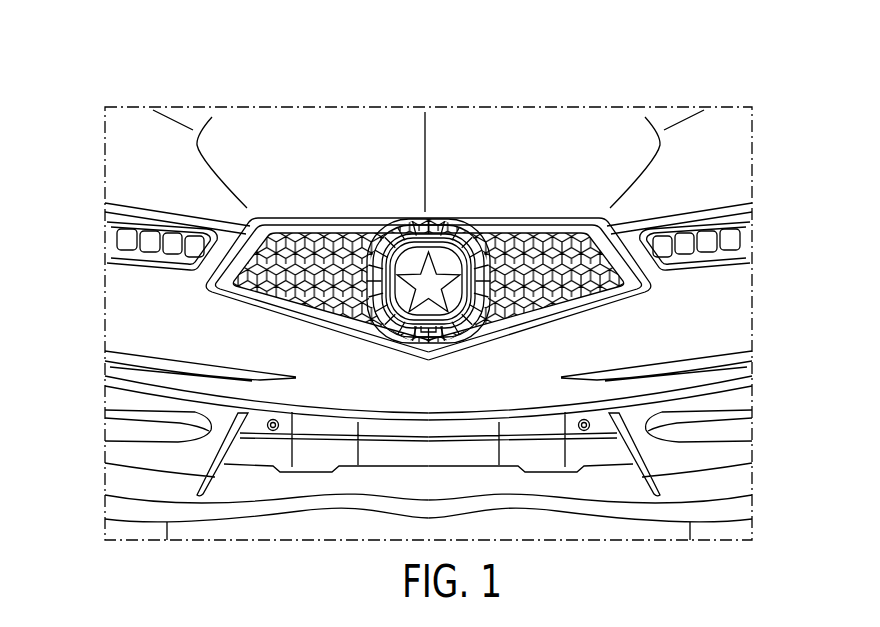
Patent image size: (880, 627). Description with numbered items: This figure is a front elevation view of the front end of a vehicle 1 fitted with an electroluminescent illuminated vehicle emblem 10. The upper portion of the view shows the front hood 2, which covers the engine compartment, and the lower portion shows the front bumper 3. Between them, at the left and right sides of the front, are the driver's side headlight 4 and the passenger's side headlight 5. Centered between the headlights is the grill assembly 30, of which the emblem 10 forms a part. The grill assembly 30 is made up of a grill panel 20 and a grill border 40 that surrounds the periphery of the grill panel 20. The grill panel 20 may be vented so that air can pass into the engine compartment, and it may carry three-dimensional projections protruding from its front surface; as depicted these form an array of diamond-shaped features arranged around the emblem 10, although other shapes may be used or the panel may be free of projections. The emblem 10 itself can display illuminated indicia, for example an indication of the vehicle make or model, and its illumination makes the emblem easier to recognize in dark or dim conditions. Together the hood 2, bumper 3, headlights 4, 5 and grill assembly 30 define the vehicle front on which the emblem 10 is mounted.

The vehicle 1 is at (714, 150).
The front hood 2 is at (285, 130).
The front bumper 3 is at (330, 388).
The driver's side headlight 4 is at (738, 240).
The passenger's side headlight 5 is at (118, 240).
The electroluminescent illuminated vehicle emblem 10 is at (377, 252).
The grill panel 20 is at (336, 250).
The grill assembly 30 is at (504, 209).
The grill border 40 is at (453, 222).